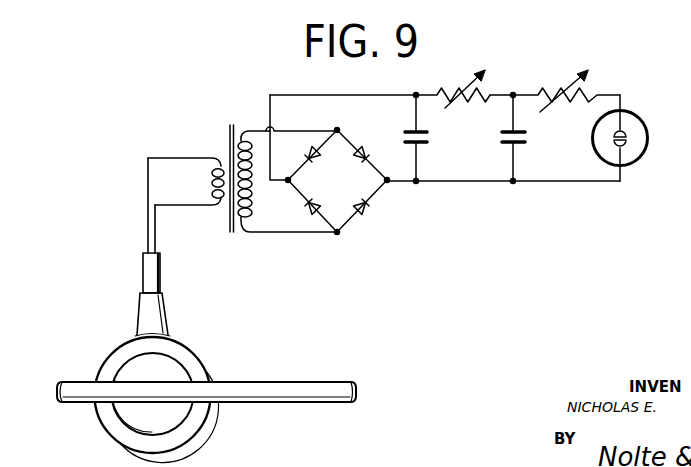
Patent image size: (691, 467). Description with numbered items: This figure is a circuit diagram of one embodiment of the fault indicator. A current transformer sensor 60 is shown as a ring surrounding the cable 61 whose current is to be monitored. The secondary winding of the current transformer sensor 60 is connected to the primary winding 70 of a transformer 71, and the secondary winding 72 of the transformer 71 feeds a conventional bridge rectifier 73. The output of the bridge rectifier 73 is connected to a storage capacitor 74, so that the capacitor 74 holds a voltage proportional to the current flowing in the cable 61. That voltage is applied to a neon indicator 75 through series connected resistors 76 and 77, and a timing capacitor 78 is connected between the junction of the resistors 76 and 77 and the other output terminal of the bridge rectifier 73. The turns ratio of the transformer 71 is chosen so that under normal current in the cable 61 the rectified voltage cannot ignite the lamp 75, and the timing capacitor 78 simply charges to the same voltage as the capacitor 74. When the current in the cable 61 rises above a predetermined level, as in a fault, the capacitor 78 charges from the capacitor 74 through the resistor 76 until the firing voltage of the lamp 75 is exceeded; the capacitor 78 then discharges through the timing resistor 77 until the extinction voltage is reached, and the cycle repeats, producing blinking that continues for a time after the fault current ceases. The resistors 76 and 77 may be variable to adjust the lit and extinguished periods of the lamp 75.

The current transformer sensor 60 is at (203, 366).
The cable 61 is at (277, 386).
The primary winding 70 is at (217, 177).
The transformer 71 is at (236, 113).
The secondary winding 72 is at (268, 196).
The bridge rectifier 73 is at (341, 191).
The storage capacitor 74 is at (430, 135).
The neon indicator 75 is at (634, 114).
The resistor 76 is at (464, 74).
The timing resistor 77 is at (566, 76).
The timing capacitor 78 is at (527, 137).